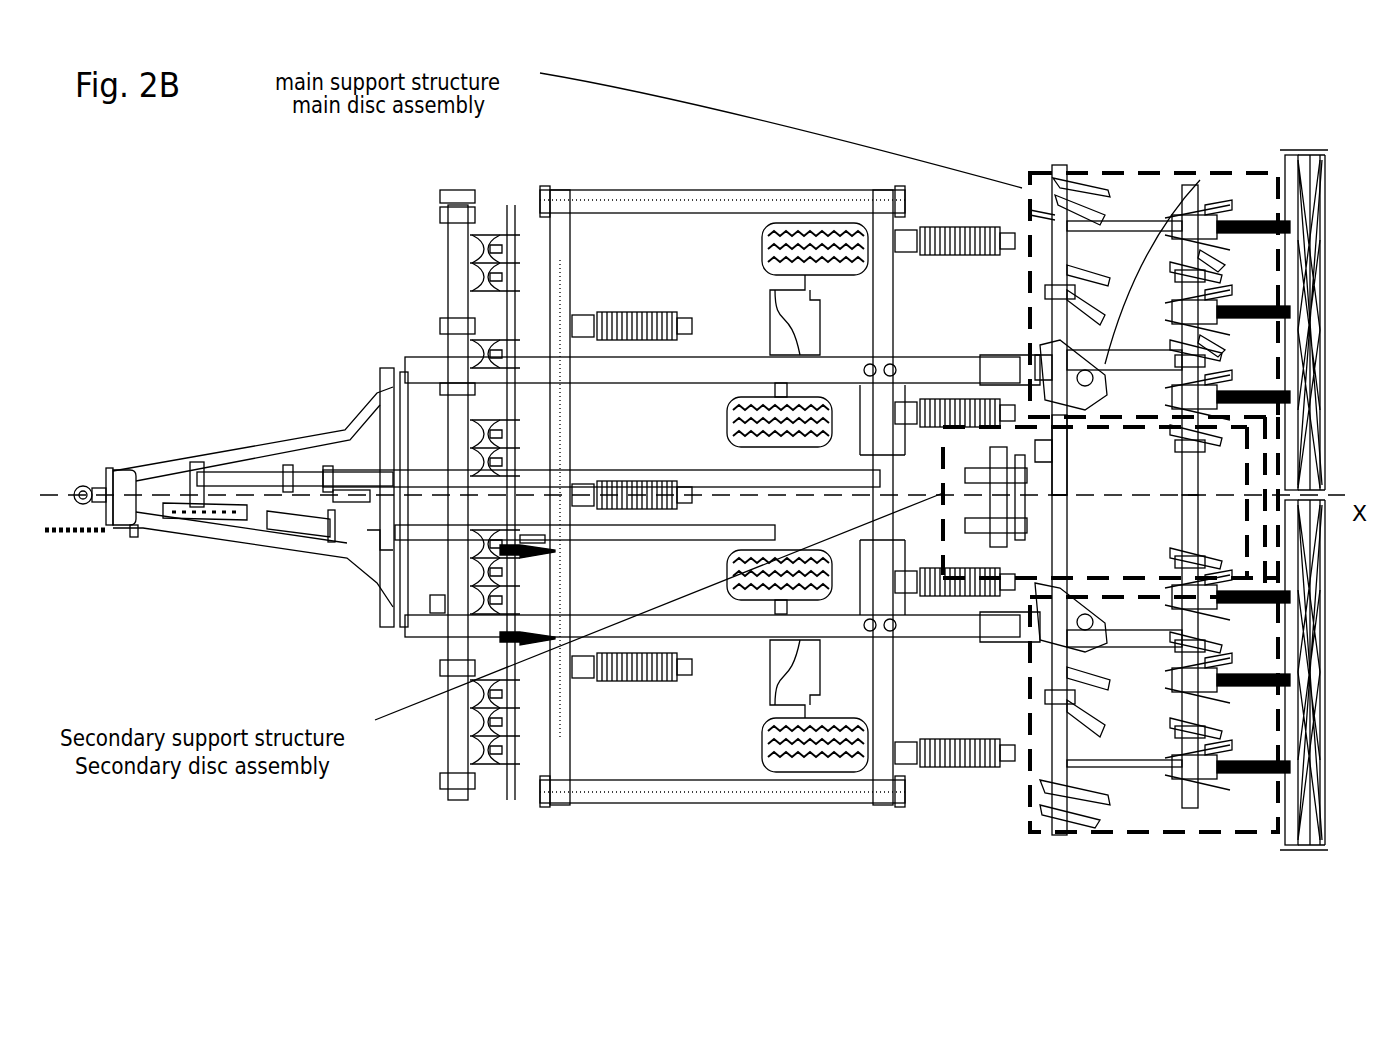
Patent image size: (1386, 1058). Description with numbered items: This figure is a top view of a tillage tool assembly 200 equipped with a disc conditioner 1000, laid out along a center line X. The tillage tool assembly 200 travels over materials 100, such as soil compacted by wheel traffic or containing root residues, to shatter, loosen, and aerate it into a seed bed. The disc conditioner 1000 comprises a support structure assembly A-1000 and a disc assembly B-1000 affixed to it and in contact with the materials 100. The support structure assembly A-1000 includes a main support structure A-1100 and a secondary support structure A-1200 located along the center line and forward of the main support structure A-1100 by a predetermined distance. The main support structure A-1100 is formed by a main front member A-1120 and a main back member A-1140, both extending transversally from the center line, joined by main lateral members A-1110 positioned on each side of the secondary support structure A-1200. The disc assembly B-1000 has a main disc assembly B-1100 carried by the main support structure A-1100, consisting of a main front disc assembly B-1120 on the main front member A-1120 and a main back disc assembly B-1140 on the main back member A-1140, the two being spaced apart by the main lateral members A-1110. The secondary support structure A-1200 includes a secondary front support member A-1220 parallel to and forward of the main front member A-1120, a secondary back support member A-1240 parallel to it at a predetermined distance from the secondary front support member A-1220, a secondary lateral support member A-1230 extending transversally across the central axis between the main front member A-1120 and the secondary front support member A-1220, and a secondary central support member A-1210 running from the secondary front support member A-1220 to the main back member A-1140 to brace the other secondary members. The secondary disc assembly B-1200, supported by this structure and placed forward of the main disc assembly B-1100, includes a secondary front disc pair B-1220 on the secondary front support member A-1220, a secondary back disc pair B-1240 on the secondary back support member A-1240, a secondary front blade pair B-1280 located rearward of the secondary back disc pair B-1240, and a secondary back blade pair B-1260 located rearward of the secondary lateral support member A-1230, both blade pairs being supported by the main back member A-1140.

The materials 100 is at (321, 625).
The tillage tool assembly 200 is at (383, 231).
The disc conditioner 1000 is at (1180, 110).
The support structure assembly A-1000 is at (845, 100).
The main support structure A-1100 is at (1243, 137).
The main lateral members A-1110 is at (1122, 628).
The main front member A-1120 is at (1057, 191).
The main back member A-1140 is at (1178, 201).
The secondary support structure A-1200 is at (558, 157).
The secondary central support member A-1210 is at (956, 478).
The secondary front support member A-1220 is at (983, 483).
The secondary lateral support member A-1230 is at (1030, 418).
The secondary back support member A-1240 is at (1113, 450).
The disc assembly B-1000 is at (1095, 905).
The main disc assembly B-1100 is at (1143, 860).
The main front disc assembly B-1120 is at (1039, 806).
The main back disc assembly B-1140 is at (1172, 803).
The secondary disc assembly B-1200 is at (397, 855).
The secondary front disc pair B-1220 is at (955, 512).
The secondary back disc pair B-1240 is at (908, 512).
The secondary back blade pair B-1260 is at (1202, 470).
The secondary front blade pair B-1280 is at (1157, 402).